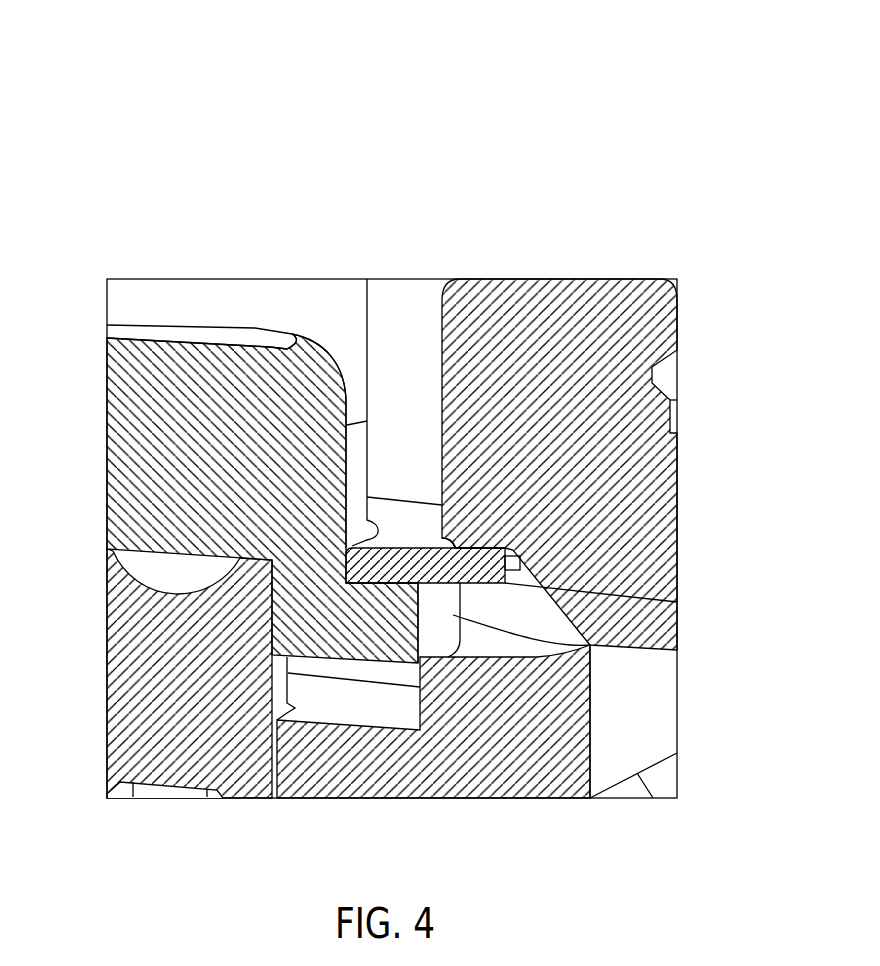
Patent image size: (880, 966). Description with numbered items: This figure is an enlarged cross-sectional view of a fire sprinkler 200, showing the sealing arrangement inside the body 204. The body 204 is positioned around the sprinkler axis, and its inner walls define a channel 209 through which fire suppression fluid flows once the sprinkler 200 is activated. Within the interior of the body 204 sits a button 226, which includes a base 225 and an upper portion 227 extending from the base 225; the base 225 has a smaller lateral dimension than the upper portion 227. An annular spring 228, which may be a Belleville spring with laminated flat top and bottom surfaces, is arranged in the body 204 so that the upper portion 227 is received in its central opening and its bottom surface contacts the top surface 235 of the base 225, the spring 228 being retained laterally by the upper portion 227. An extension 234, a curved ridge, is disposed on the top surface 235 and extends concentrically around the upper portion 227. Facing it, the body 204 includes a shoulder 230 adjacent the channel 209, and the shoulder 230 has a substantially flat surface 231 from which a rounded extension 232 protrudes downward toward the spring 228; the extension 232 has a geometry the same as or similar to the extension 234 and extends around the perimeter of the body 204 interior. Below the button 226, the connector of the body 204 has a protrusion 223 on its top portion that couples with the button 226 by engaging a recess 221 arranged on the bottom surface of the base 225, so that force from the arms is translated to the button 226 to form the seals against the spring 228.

The sprinkler 200 is at (132, 50).
The body 204 is at (653, 558).
The channel 209 is at (407, 327).
The recess 221 is at (270, 632).
The protrusion 223 is at (125, 628).
The base 225 is at (453, 615).
The button 226 is at (206, 335).
The upper portion 227 is at (347, 365).
The spring 228 is at (520, 570).
The shoulder 230 is at (460, 548).
The surface 231 is at (440, 548).
The extension 232 is at (507, 548).
The extension 234 is at (380, 583).
The top surface 235 is at (346, 583).